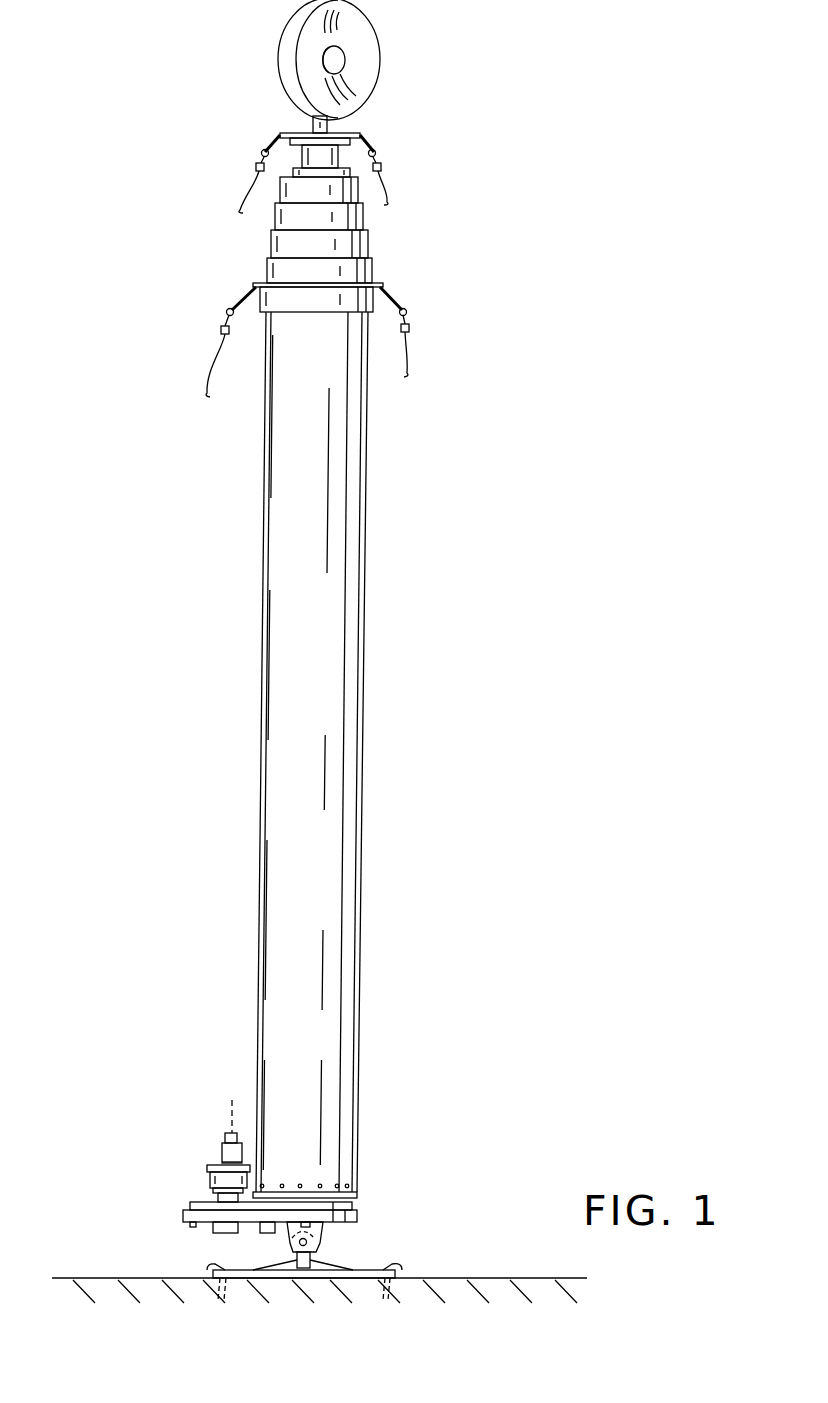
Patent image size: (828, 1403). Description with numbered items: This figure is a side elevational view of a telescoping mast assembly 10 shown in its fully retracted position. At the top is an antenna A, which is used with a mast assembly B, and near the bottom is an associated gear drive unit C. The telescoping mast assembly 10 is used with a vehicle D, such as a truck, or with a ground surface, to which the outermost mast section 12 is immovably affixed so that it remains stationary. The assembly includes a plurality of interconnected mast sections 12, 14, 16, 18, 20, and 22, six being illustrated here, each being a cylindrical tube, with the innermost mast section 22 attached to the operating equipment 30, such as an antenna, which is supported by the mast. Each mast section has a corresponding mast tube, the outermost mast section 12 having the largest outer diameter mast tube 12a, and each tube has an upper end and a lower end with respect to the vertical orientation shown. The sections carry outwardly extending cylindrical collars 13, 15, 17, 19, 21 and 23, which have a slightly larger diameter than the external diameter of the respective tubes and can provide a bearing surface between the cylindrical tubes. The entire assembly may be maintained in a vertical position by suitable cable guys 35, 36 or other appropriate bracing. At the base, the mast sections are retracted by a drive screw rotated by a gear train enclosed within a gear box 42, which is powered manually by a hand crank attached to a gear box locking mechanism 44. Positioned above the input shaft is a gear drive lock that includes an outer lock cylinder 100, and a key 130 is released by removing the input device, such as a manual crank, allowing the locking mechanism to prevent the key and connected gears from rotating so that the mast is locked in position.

The telescoping mast assembly 10 is at (398, 775).
The outermost mast section 12 is at (263, 639).
The mast tube 12a is at (355, 678).
The cylindrical collar 13 is at (378, 300).
The mast section 14 is at (267, 268).
The cylindrical collar 15 is at (373, 272).
The mast section 16 is at (271, 242).
The cylindrical collar 17 is at (367, 245).
The mast section 18 is at (275, 210).
The cylindrical collar 19 is at (365, 217).
The mast section 20 is at (277, 190).
The cylindrical collar 21 is at (358, 188).
The innermost mast section 22 is at (293, 160).
The cylindrical collar 23 is at (350, 173).
The operating equipment 30 is at (303, 37).
The cable guy 35 is at (410, 358).
The cable guy 36 is at (385, 192).
The gear box 42 is at (360, 1210).
The gear box locking mechanism 44 is at (215, 1160).
The outer lock cylinder 100 is at (210, 1178).
The key 130 is at (225, 1138).
The antenna A is at (405, 53).
The mast assembly B is at (440, 545).
The gear drive unit C is at (172, 1165).
The vehicle D is at (133, 1275).